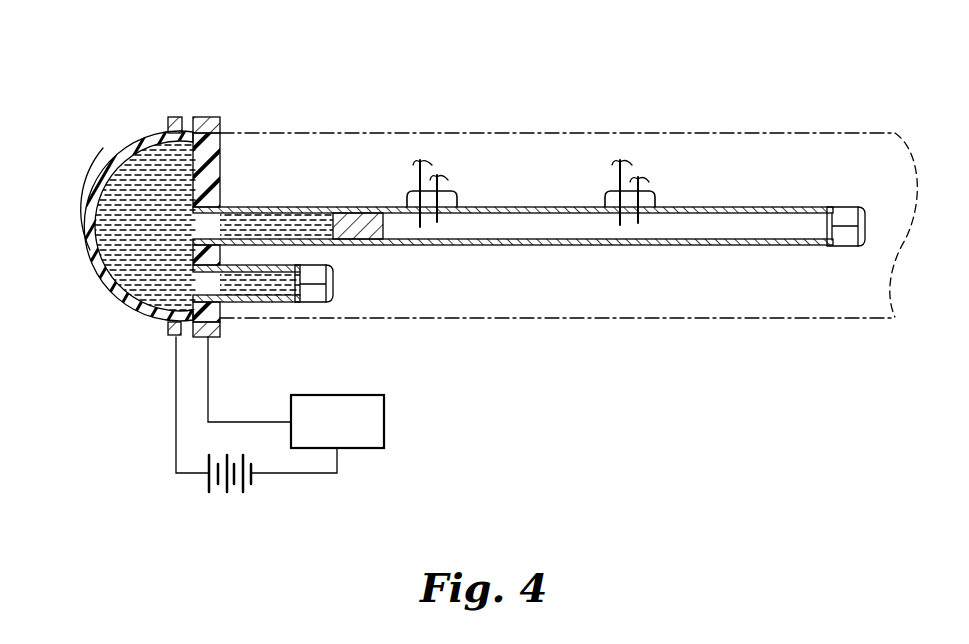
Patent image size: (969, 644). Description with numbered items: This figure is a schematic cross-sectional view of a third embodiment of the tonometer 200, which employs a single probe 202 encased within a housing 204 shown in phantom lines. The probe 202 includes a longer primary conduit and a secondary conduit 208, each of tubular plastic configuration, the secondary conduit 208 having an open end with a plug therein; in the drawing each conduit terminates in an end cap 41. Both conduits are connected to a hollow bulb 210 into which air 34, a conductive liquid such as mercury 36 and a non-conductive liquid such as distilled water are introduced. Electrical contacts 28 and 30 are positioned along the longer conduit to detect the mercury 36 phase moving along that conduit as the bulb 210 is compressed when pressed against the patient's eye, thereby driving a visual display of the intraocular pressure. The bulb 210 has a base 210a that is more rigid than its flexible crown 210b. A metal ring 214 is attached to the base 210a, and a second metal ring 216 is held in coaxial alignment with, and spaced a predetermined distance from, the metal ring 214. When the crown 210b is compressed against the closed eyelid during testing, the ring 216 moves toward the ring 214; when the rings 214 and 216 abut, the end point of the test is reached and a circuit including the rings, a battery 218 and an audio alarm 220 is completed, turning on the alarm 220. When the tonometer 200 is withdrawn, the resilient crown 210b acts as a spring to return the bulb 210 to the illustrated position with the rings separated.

The tonometer 200 is at (168, 68).
The probe 202 is at (107, 288).
The housing 204 is at (747, 133).
The secondary conduit 208 is at (268, 302).
The hollow bulb 210 is at (122, 157).
The base 210a is at (222, 145).
The crown 210b is at (86, 220).
The metal ring 214 is at (207, 116).
The second metal ring 216 is at (167, 330).
The battery 218 is at (237, 497).
The audio alarm 220 is at (365, 395).
The electrical contact 28 is at (457, 200).
The electrical contact 30 is at (655, 198).
The air 34 is at (718, 232).
The mercury 36 is at (362, 208).
The end cap 41 is at (840, 232).